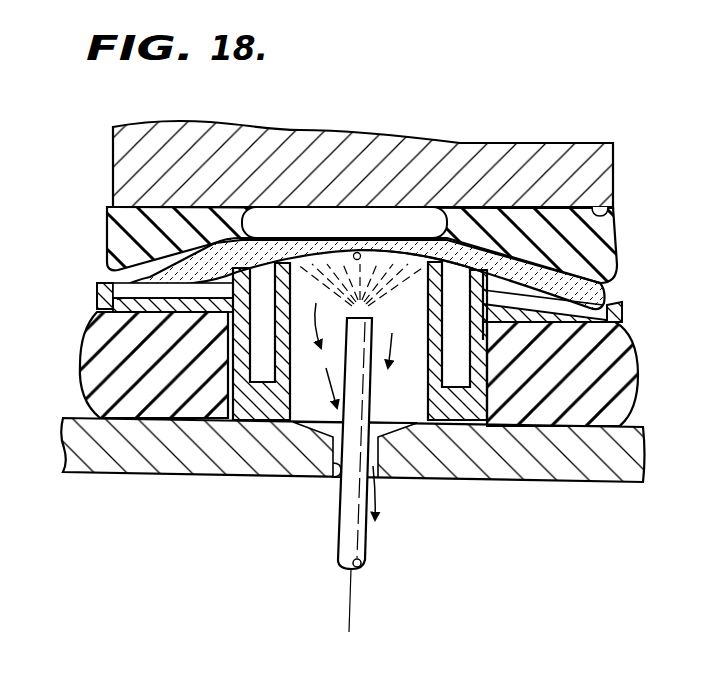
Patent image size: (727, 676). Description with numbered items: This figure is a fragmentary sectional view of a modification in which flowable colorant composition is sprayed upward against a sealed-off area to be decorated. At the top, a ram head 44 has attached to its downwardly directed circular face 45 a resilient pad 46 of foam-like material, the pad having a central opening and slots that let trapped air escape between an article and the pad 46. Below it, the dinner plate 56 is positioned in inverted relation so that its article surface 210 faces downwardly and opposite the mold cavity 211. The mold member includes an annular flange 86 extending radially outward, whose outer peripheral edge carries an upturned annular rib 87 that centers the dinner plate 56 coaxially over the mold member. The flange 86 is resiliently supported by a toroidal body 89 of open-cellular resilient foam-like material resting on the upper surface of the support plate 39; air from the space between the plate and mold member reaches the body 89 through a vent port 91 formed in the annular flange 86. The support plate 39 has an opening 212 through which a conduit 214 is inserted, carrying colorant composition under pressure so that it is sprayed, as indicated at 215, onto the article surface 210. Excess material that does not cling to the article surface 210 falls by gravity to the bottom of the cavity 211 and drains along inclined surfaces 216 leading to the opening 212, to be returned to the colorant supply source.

The support plate 39 is at (583, 479).
The ram head 44 is at (553, 148).
The downwardly directed circular face 45 is at (615, 218).
The resilient pad 46 is at (596, 242).
The dinner plate 56 is at (605, 296).
The annular flange 86 is at (97, 330).
The upturned annular rib 87 is at (100, 290).
The toroidal body 89 is at (623, 384).
The vent port 91 is at (550, 318).
The article surface 210 is at (360, 252).
The mold cavity 211 is at (430, 362).
The opening 212 is at (337, 478).
The conduit 214 is at (368, 535).
The spray 215 is at (398, 265).
The inclined surfaces 216 is at (302, 424).